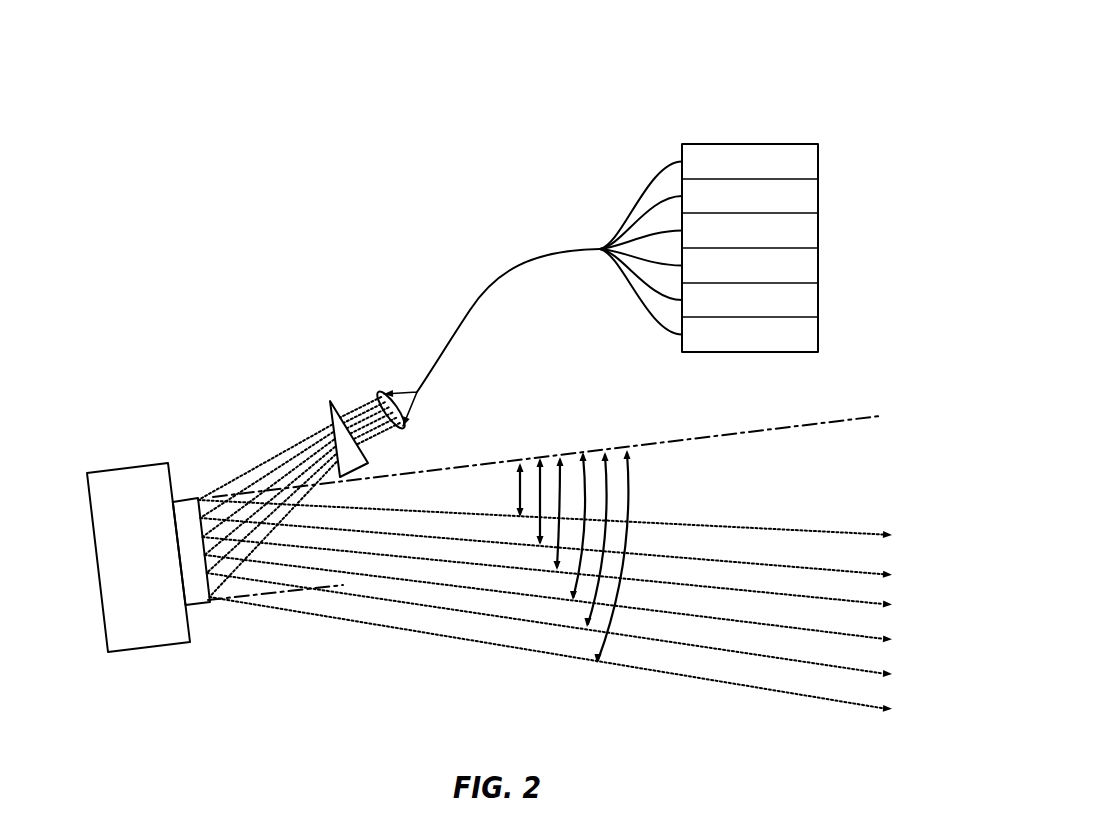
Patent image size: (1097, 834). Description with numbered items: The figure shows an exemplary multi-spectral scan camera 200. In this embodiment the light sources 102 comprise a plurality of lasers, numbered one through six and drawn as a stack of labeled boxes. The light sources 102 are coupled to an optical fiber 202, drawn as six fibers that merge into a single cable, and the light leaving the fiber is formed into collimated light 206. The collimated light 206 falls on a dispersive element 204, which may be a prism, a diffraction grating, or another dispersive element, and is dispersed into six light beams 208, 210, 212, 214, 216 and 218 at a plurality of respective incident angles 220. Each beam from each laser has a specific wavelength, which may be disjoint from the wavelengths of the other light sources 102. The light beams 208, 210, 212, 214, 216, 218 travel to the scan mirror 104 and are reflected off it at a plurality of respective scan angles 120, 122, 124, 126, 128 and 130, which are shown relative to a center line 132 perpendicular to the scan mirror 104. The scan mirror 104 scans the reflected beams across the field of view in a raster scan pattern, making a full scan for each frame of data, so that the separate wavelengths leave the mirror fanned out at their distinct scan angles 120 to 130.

The multi-spectral scan camera 200 is at (650, 47).
The light sources 102 is at (795, 143).
The scan mirror 104 is at (130, 465).
The optical fiber 202 is at (565, 238).
The dispersive element 204 is at (336, 408).
The collimated light 206 is at (384, 433).
The light beam 208 is at (222, 487).
The light beam 210 is at (248, 487).
The light beam 212 is at (275, 483).
The light beam 214 is at (303, 470).
The light beam 216 is at (323, 466).
The light beam 218 is at (307, 489).
The incident angles 220 is at (242, 565).
The center line 132 is at (720, 440).
The scan angle 120 is at (518, 488).
The scan angle 122 is at (540, 488).
The scan angle 124 is at (560, 487).
The scan angle 126 is at (583, 488).
The scan angle 128 is at (606, 472).
The scan angle 130 is at (627, 480).